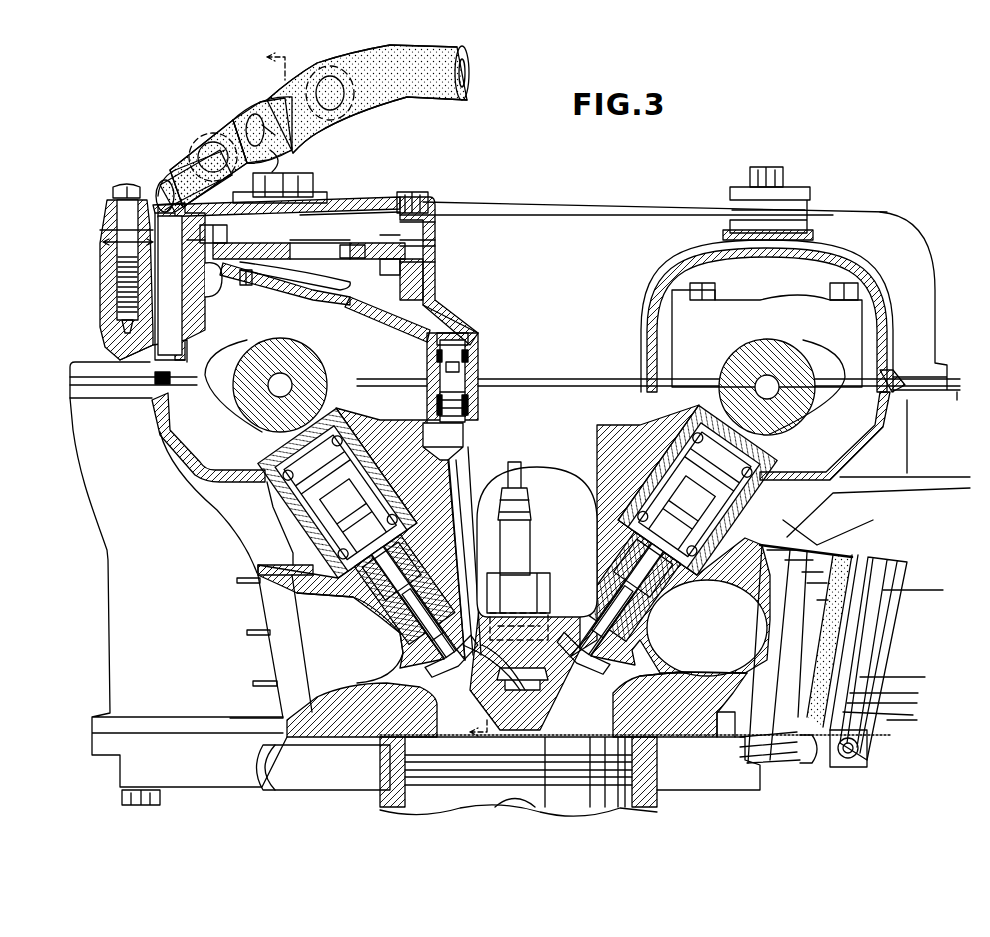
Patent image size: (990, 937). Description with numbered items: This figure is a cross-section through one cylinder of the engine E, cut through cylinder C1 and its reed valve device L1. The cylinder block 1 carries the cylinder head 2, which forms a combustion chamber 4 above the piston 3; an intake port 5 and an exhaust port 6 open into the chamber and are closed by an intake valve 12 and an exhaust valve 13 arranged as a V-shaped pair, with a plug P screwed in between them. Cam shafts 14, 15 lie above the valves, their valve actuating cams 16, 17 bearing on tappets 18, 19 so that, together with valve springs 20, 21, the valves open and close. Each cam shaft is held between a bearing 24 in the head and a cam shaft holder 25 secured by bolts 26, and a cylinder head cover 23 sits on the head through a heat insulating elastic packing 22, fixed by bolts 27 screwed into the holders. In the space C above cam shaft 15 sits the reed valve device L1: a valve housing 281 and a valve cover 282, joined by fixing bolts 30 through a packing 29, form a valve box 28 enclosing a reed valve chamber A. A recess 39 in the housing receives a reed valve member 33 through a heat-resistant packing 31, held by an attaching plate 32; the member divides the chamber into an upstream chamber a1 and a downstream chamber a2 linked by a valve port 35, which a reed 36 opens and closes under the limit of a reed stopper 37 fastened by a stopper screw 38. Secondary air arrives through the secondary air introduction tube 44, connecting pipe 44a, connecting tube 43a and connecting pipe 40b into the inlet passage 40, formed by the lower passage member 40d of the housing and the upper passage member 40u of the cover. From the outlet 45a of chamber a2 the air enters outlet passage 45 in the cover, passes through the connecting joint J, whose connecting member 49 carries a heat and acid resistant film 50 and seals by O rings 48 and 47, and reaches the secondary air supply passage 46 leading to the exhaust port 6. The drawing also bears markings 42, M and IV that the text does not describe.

The cylinder block 1 is at (700, 788).
The cylinder head 2 is at (670, 723).
The piston 3 is at (640, 770).
The combustion chamber 4 is at (533, 715).
The intake port 5 is at (693, 683).
The exhaust port 6 is at (360, 692).
The intake valve 12 is at (598, 668).
The exhaust valve 13 is at (440, 660).
The cam shaft 14 is at (745, 366).
The cam shaft 15 is at (310, 358).
The valve actuating cam 16 is at (828, 398).
The valve actuating cam 17 is at (207, 382).
The tappet 18 is at (778, 452).
The tappet 19 is at (272, 460).
The valve spring 20 is at (648, 490).
The valve spring 21 is at (396, 502).
The heat insulating elastic packing 22 is at (893, 370).
The cylinder head cover 23 is at (908, 222).
The bearing 24 is at (840, 455).
The cam shaft holder 25 is at (778, 321).
The bolt 26 is at (717, 293).
The bolt 27 is at (770, 167).
The valve box 28 is at (356, 222).
The valve housing 281 is at (431, 266).
The valve cover 282 is at (431, 228).
The packing 29 is at (432, 244).
The fixing bolt 30 is at (124, 186).
The heat-resistant packing 31 is at (401, 260).
The attaching plate 32 is at (236, 240).
The reed valve member 33 is at (270, 249).
The valve port 35 is at (348, 245).
The reed 36 is at (410, 279).
The reed stopper 37 is at (312, 290).
The stopper screw 38 is at (246, 286).
The recess 39 is at (190, 262).
The inlet passage 40 is at (182, 322).
The connecting pipe 40b is at (198, 185).
The lower passage member 40d is at (230, 288).
The upper passage member 40u is at (100, 230).
The seal 42 is at (190, 240).
The connecting tube 43a is at (215, 148).
The secondary air introduction tube 44 is at (417, 95).
The connecting pipe 44a is at (262, 118).
The outlet passage 45 is at (442, 320).
The outlet 45a is at (362, 305).
The secondary air supply passage 46 is at (457, 460).
The O ring 47 is at (430, 398).
The O ring 48 is at (430, 360).
The connecting member 49 is at (468, 394).
The heat and acid resistant film 50 is at (468, 378).
The reed valve chamber A is at (325, 215).
The space C is at (284, 335).
The cylinder C1 is at (522, 776).
The engine E is at (606, 180).
The connecting joint J is at (474, 352).
The reed valve device L1 is at (388, 225).
The plug P is at (532, 508).
The upstream chamber a1 is at (318, 226).
The downstream chamber a2 is at (301, 276).
The intake manifold M is at (841, 643).
The section line IV is at (380, 396).